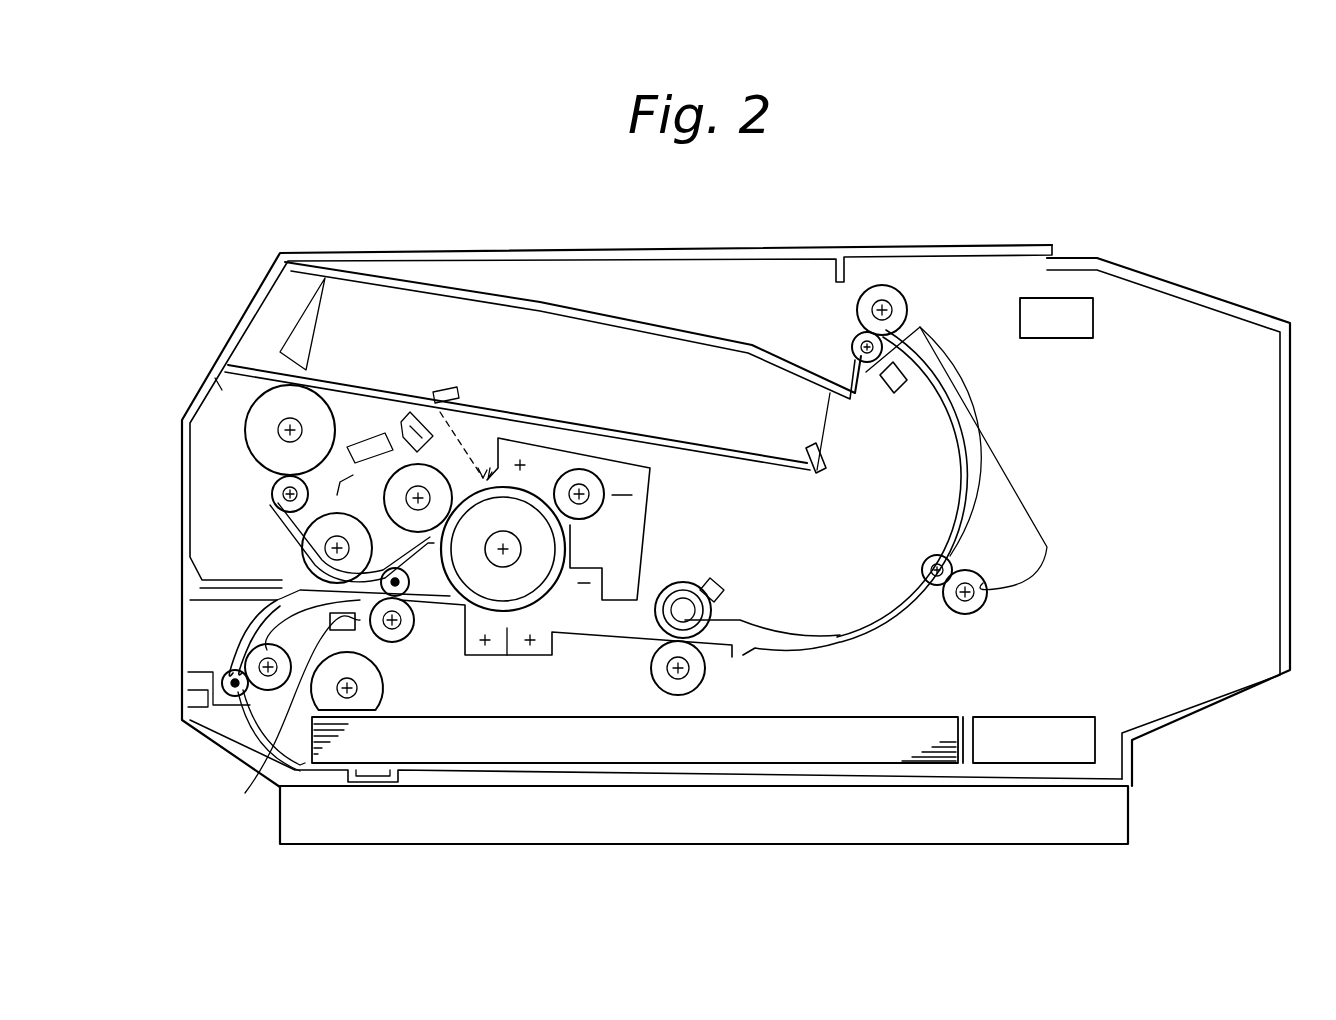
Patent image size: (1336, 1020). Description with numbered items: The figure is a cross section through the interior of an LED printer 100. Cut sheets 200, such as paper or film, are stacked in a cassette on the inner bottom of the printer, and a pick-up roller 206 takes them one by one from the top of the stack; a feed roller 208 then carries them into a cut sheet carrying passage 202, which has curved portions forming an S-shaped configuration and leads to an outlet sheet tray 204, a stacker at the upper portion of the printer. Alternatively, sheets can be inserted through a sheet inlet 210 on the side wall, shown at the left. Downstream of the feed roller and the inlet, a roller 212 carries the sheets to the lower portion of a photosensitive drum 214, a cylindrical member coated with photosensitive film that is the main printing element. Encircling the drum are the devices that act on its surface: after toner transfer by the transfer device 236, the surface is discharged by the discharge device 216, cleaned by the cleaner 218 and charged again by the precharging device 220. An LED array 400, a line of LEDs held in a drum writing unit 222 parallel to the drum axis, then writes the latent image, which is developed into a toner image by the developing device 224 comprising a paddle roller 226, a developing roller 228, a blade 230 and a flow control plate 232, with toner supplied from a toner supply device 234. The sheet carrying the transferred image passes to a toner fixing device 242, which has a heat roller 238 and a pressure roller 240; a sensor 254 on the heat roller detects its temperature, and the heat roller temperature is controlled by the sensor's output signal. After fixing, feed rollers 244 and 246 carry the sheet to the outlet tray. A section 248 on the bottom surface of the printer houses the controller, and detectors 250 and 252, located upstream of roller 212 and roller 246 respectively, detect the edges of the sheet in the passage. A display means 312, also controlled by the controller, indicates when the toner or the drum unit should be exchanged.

The LED printer 100 is at (758, 200).
The cut sheets 200 is at (918, 727).
The cut sheet carrying passage 202 is at (972, 515).
The outlet sheet tray 204 is at (635, 322).
The pick-up roller 206 is at (370, 697).
The feed roller 208 is at (255, 693).
The sheet inlet 210 is at (187, 590).
The roller 212 is at (393, 632).
The photosensitive drum 214 is at (487, 477).
The discharge device 216 is at (583, 603).
The cleaner 218 is at (594, 483).
The precharging device 220 is at (541, 470).
The drum writing unit 222 is at (810, 467).
The developing device 224 is at (285, 518).
The paddle roller 226 is at (303, 550).
The developing roller 228 is at (407, 464).
The blade 230 is at (424, 420).
The flow control plate 232 is at (357, 450).
The toner supply device 234 is at (267, 445).
The transfer device 236 is at (527, 657).
The heat roller 238 is at (690, 590).
The pressure roller 240 is at (697, 677).
The toner fixing device 242 is at (646, 676).
The feed roller 244 is at (977, 603).
The feed roller 246 is at (902, 303).
The section 248 is at (1120, 806).
The detector 250 is at (272, 715).
The detector 252 is at (895, 385).
The sensor 254 is at (727, 593).
The display means 312 is at (1094, 312).
The LED array 400 is at (455, 387).